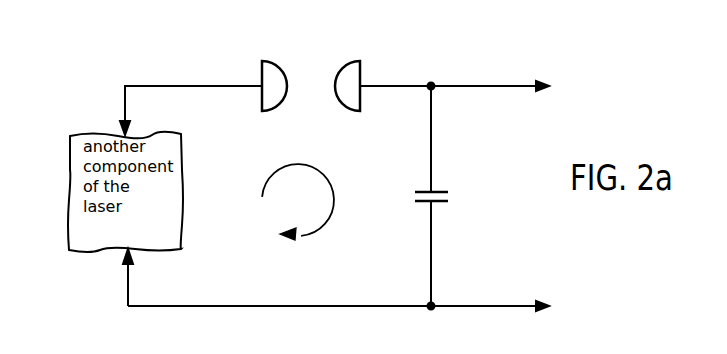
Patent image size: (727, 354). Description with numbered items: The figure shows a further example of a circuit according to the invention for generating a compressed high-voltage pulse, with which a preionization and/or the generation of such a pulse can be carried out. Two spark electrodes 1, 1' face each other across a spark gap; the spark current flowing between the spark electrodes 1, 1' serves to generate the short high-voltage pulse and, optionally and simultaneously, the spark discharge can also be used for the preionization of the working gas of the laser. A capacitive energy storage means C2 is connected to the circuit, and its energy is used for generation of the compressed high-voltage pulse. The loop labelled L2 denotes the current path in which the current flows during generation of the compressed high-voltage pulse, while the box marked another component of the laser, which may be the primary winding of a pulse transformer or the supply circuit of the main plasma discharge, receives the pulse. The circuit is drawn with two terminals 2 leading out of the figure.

The spark electrode 1 is at (274, 55).
The spark electrode 1' is at (349, 55).
The output terminals 2 is at (503, 196).
The capacitive energy storage means C2 is at (449, 201).
The current path L2 is at (300, 238).